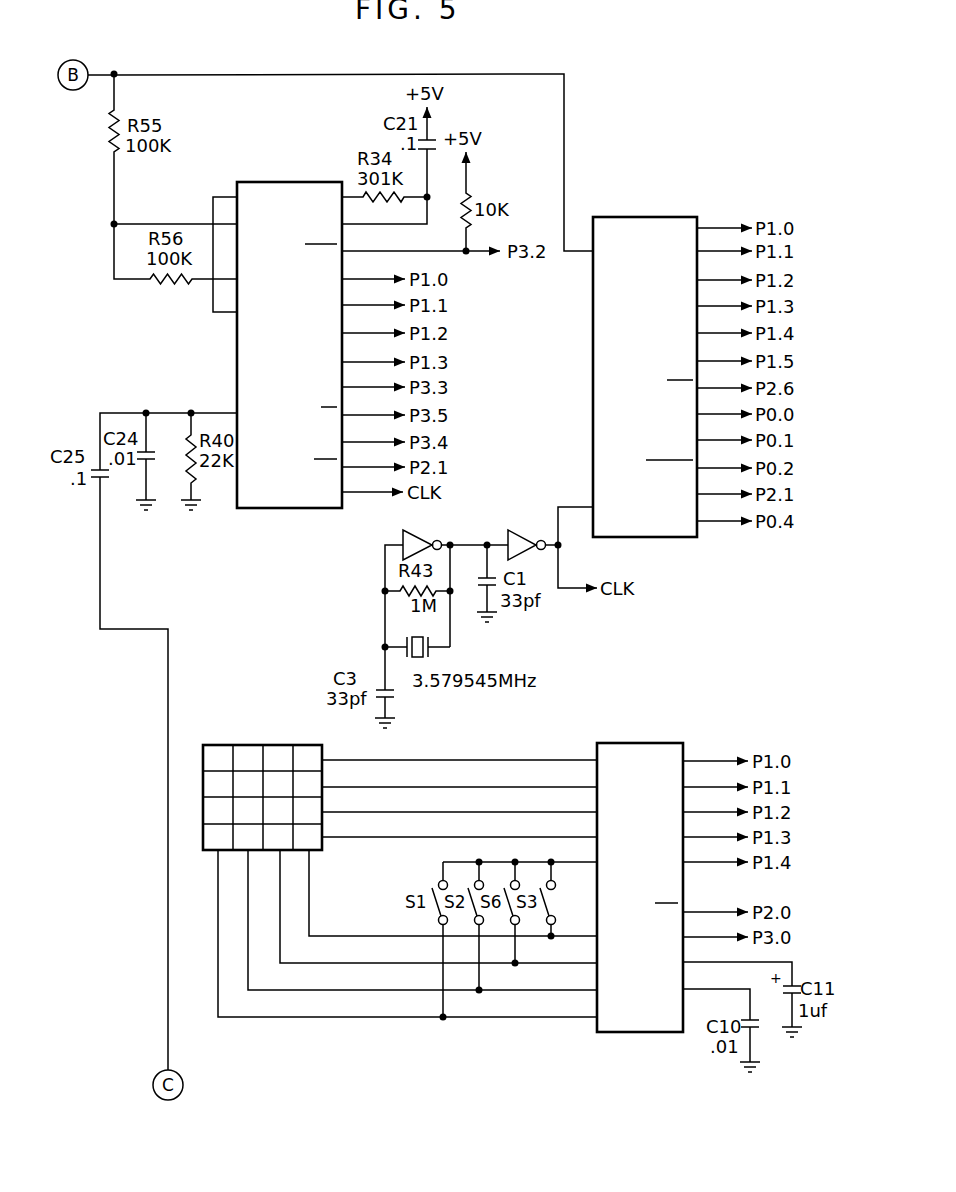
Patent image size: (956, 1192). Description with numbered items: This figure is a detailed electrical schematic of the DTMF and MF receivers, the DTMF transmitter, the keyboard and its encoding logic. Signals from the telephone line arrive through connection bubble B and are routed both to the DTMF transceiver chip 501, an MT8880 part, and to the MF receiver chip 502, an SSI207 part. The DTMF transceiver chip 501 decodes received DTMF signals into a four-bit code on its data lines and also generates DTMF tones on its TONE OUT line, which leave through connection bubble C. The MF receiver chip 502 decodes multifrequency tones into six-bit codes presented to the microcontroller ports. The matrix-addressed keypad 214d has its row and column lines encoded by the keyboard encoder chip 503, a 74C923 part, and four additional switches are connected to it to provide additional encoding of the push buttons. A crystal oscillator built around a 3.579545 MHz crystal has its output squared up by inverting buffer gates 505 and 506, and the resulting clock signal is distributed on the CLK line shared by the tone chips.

The DTMF transceiver chip 501 is at (276, 182).
The MF receiver chip 502 is at (643, 217).
The keyboard encoder chip 503 is at (607, 743).
The inverting buffer gate 505 is at (418, 536).
The inverting buffer gate 506 is at (514, 531).
The keypad 214d is at (278, 745).